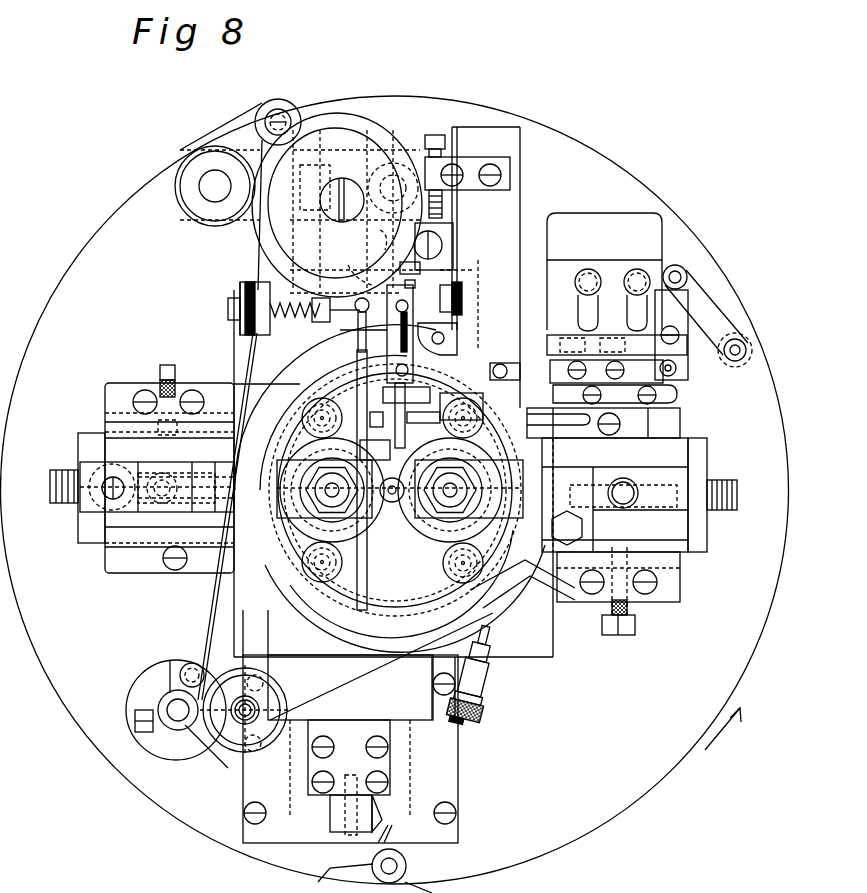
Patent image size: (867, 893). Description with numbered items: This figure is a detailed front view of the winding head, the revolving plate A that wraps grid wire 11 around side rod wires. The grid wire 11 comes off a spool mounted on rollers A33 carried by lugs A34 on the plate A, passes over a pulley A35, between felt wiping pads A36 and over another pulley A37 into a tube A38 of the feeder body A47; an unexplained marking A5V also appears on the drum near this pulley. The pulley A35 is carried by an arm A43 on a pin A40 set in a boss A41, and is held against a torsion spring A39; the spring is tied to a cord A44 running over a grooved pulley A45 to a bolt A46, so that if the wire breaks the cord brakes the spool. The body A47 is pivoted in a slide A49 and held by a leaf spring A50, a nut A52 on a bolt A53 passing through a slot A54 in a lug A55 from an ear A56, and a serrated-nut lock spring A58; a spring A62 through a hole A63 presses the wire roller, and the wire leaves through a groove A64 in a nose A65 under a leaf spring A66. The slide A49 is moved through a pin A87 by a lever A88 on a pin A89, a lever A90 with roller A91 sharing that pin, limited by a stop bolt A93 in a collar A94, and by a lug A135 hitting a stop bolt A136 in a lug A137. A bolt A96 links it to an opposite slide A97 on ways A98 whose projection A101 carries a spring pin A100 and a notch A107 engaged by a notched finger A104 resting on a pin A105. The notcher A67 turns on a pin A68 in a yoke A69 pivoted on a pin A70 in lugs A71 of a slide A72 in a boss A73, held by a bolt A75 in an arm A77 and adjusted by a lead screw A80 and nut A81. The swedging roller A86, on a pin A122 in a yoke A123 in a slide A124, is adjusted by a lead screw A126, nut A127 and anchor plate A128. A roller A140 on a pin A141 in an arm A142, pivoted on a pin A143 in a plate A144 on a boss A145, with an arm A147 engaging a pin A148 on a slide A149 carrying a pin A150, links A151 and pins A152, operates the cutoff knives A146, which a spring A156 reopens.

The plate A is at (130, 198).
The pin A89 is at (205, 196).
The roller A91 is at (276, 100).
The lever A90 is at (224, 145).
The lever A88 is at (238, 220).
The pulley A37 is at (348, 110).
The pin A87 is at (385, 180).
The stop bolt A93 is at (367, 238).
The collar A94 is at (355, 247).
The element A5V is at (345, 268).
The felt wiping pads A36 is at (248, 282).
The leaf spring A50 is at (345, 325).
The lugs A34 is at (288, 395).
The rollers A33 is at (350, 395).
The bolt A96 is at (352, 598).
The yoke A69 is at (312, 465).
The grid wire cutoff knives A146 is at (450, 490).
The pin A68 is at (318, 512).
The notcher A67 is at (352, 548).
The swedging roller A86 is at (431, 482).
The nose A65 is at (400, 465).
The groove A64 is at (430, 499).
The leaf spring A66 is at (430, 476).
The spring A62 is at (395, 340).
The hole A63 is at (398, 350).
The cord A44 is at (228, 600).
The slide A49 is at (412, 135).
The lug A137 is at (468, 158).
The stop bolt A136 is at (443, 208).
The lug A135 is at (455, 240).
The tube A38 is at (413, 263).
The bolt / slot A46 is at (500, 645).
The body A47 is at (488, 680).
The leaf spring A58 is at (458, 312).
The slot A54 is at (450, 339).
The bolt A53 is at (477, 344).
The nut A52 is at (471, 359).
The lug A55 is at (405, 376).
The ear A56 is at (441, 362).
The pins A152 is at (416, 397).
The pin A150 is at (480, 391).
The slide A149 is at (516, 360).
The spring A156 is at (530, 399).
The links A151 is at (442, 405).
The yoke A123 is at (482, 470).
The pin A122 is at (484, 498).
The boss A145 is at (565, 220).
The plate A144 is at (588, 258).
The pin A143 is at (680, 268).
The arm A142 is at (710, 285).
The pin A141 is at (742, 342).
The roller A140 is at (736, 362).
The arm A147 is at (688, 345).
The pin A148 is at (678, 370).
The anchor plate A128 is at (705, 472).
The nut A127 is at (620, 480).
The lead screw A126 is at (738, 496).
The slide A124 is at (690, 555).
The boss A73 is at (105, 400).
The slide A72 is at (100, 435).
The arm A77 is at (78, 448).
The lead screw A80 is at (50, 488).
The adjustable bolt A75 is at (95, 512).
The nut A81 is at (157, 494).
The lugs A71 is at (186, 468).
The pin A70 is at (200, 470).
The pulley A35 is at (280, 698).
The grid wire 11 is at (372, 680).
The slide A97 is at (336, 775).
The ways A98 is at (290, 840).
The projection A101 is at (332, 832).
The spring actuated pin A100 is at (348, 845).
The notch A107 is at (391, 813).
The pin A105 is at (395, 833).
The notched finger A104 is at (379, 871).
The torsion spring A39 is at (160, 700).
The pin A40 is at (183, 667).
The boss A41 is at (135, 711).
The arm A43 is at (212, 675).
The grooved pulley A45 is at (315, 628).